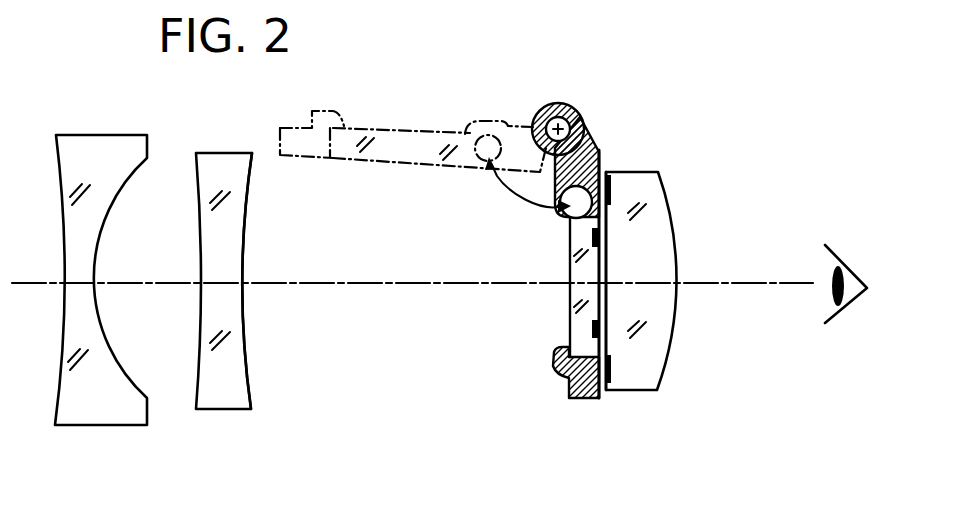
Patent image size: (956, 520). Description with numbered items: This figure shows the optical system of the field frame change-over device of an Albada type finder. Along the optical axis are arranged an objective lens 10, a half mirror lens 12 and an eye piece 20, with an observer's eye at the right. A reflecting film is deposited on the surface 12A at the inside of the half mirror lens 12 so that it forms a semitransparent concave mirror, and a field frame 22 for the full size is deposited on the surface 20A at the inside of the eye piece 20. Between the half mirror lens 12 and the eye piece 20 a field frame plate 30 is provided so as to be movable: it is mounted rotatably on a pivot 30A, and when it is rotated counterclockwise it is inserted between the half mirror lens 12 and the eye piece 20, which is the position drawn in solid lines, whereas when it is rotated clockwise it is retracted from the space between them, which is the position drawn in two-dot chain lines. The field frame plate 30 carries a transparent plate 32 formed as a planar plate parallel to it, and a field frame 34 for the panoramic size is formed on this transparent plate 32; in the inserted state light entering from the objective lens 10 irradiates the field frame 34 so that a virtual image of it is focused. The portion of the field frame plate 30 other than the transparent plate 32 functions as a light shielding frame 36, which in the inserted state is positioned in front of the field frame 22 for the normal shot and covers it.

The objective lens 10 is at (107, 410).
The half mirror lens 12 is at (229, 393).
The surface at the inside of the half mirror lens 12A is at (253, 385).
The eye piece 20 is at (641, 378).
The surface at the inside of the eye piece 20A is at (606, 252).
The field frame 22 is at (608, 198).
The field frame plate 30 is at (344, 122).
The pivot 30A is at (580, 112).
The transparent plate 32 is at (570, 226).
The field frame for the panoramic size 34 is at (593, 236).
The light shielding frame 36 is at (564, 371).